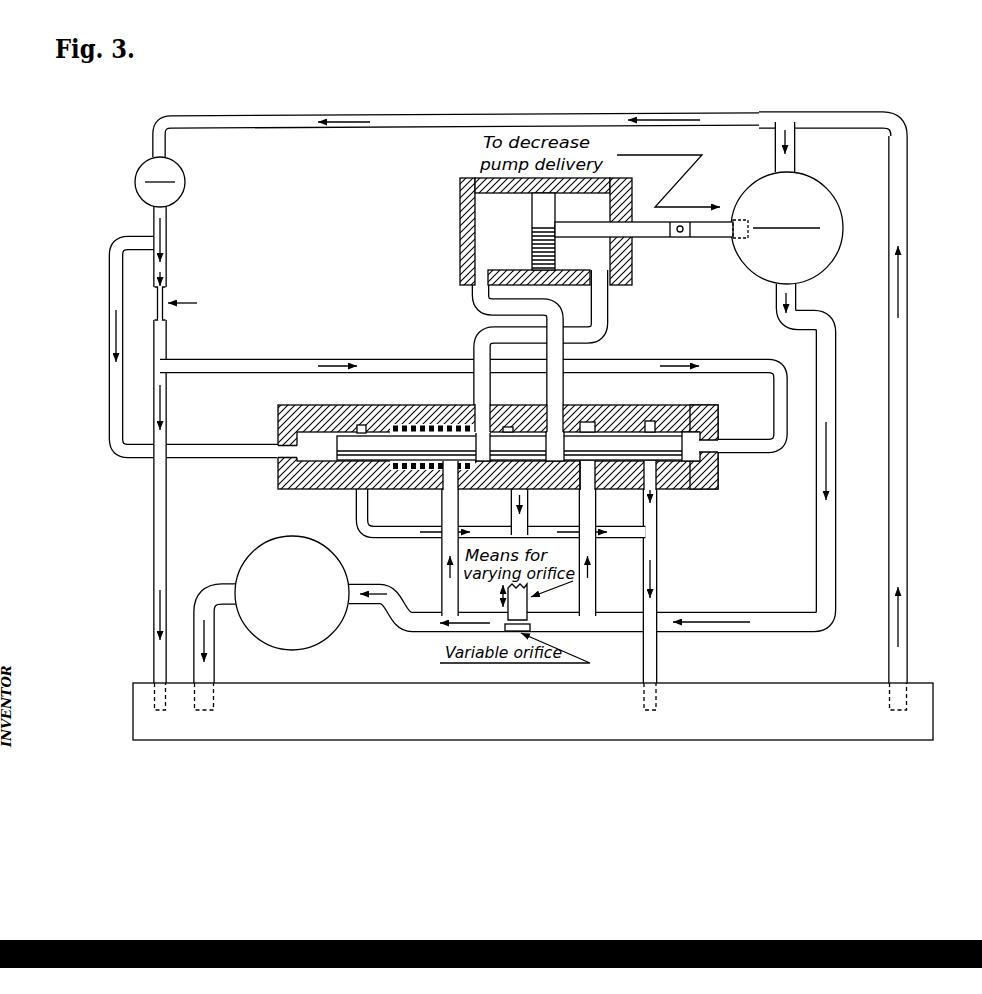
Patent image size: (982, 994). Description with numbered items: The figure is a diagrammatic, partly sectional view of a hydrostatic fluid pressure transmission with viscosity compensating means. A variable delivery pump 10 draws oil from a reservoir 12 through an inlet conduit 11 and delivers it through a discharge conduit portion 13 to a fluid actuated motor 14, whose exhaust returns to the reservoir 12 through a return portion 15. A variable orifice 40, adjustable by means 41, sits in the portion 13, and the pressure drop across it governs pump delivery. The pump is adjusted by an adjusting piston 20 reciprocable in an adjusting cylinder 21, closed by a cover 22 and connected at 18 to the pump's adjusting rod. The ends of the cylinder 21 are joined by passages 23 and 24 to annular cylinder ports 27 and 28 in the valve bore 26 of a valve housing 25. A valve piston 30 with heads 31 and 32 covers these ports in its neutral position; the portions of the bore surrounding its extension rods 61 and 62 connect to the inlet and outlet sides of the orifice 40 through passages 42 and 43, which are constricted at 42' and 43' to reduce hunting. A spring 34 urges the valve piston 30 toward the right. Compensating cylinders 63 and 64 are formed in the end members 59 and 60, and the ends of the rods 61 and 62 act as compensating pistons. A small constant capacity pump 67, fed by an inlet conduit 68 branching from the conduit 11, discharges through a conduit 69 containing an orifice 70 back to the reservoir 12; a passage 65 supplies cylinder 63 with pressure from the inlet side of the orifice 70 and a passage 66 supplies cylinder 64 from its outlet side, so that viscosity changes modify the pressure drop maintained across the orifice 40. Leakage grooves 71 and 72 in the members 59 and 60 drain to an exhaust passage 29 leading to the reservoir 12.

The variable delivery pump 10 is at (819, 184).
The inlet conduit 11 is at (908, 407).
The reservoir 12 is at (934, 694).
The discharge conduit portion 13 is at (837, 414).
The fluid actuated motor 14 is at (266, 542).
The return conduit portion 15 is at (214, 666).
The connection 18 is at (680, 234).
The adjusting piston 20 is at (534, 208).
The adjusting cylinder 21 is at (460, 213).
The cover 22 is at (633, 191).
The passage 23 is at (613, 304).
The passage 24 is at (474, 299).
The valve housing 25 is at (611, 418).
The valve bore 26 is at (508, 427).
The annular cylinder port 27 is at (482, 423).
The annular cylinder port 28 is at (564, 423).
The exhaust passage 29 is at (658, 592).
The valve piston 30 is at (504, 498).
The head 31 is at (464, 492).
The head 32 is at (566, 492).
The spring 34 is at (418, 424).
The variable orifice 40 is at (533, 622).
The orifice adjusting means 41 is at (507, 595).
The passage 42 is at (609, 552).
The constriction 42' is at (571, 494).
The passage 43 is at (427, 552).
The constriction 43' is at (504, 510).
The end closure member 59 is at (277, 415).
The end closure member 60 is at (722, 411).
The extension rod 61 is at (354, 452).
The extension rod 62 is at (631, 488).
The compensating cylinder 63 is at (306, 460).
The compensating cylinder 64 is at (694, 462).
The passage 65 is at (177, 347).
The passage 66 is at (252, 361).
The constant capacity pump 67 is at (136, 179).
The inlet conduit 68 is at (263, 118).
The discharge conduit 69 is at (167, 219).
The orifice 70 is at (166, 299).
The leakage groove 71 is at (359, 428).
The leakage groove 72 is at (658, 420).